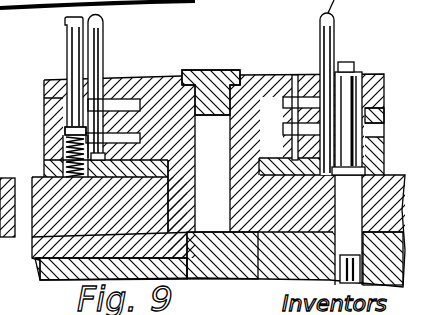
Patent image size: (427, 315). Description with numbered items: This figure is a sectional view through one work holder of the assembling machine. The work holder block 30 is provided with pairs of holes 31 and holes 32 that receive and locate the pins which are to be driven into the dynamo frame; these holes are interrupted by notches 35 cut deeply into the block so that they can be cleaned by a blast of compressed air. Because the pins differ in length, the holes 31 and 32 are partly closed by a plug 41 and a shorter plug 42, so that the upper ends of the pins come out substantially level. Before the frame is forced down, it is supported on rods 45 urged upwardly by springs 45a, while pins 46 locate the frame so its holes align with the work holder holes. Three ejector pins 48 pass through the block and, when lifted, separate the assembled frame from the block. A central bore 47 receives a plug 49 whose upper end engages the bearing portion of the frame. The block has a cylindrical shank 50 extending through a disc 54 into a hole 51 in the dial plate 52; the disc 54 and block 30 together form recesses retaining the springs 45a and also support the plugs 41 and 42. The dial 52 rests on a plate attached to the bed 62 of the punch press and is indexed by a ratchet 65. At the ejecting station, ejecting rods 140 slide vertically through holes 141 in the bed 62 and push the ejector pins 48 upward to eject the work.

The work holder block 30 is at (385, 80).
The holes 31 is at (294, 75).
The holes 32 is at (136, 77).
The notches 35 is at (365, 100).
The plug 41 is at (297, 130).
The plug 42 is at (140, 143).
The rods 45 is at (67, 58).
The springs 45a is at (65, 131).
The pins 46 is at (103, 34).
The central bore 47 is at (218, 205).
The ejector pins 48 is at (348, 62).
The plug 49 is at (213, 70).
The cylindrical shank 50 is at (258, 158).
The hole 51 is at (170, 213).
The dial plate 52 is at (36, 185).
The disc 54 is at (47, 157).
The bed 62 is at (48, 258).
The ratchet 65 is at (40, 280).
The ejecting rods 140 is at (350, 255).
The holes 141 is at (383, 240).